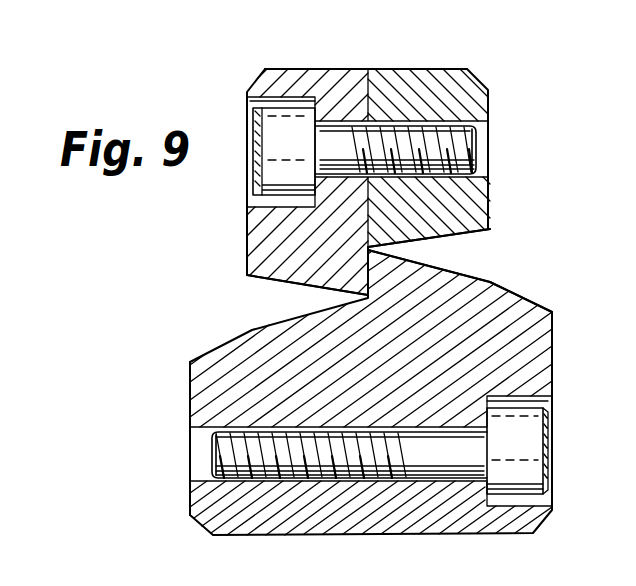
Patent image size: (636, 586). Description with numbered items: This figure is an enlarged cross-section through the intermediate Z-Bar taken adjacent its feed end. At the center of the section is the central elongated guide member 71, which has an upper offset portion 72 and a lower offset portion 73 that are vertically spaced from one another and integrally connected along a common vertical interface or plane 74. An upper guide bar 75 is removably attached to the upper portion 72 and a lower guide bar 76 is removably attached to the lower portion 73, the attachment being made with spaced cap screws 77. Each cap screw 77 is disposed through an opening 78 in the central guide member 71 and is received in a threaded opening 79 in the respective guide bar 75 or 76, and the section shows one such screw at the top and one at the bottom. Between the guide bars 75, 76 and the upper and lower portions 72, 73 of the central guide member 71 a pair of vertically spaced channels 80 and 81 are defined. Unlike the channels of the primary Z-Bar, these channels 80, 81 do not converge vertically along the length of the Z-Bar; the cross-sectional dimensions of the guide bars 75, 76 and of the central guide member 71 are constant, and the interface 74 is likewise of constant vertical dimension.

The central elongated guide member 71 is at (242, 237).
The upper offset portion 72 is at (283, 52).
The lower offset portion 73 is at (543, 366).
The vertical interface 74 is at (408, 260).
The upper guide bar 75 is at (489, 196).
The lower guide bar 76 is at (189, 400).
The cap screw 77 is at (272, 128).
The opening 78 is at (340, 119).
The threaded opening 79 is at (478, 132).
The channel 80 is at (381, 246).
The channel 81 is at (365, 293).